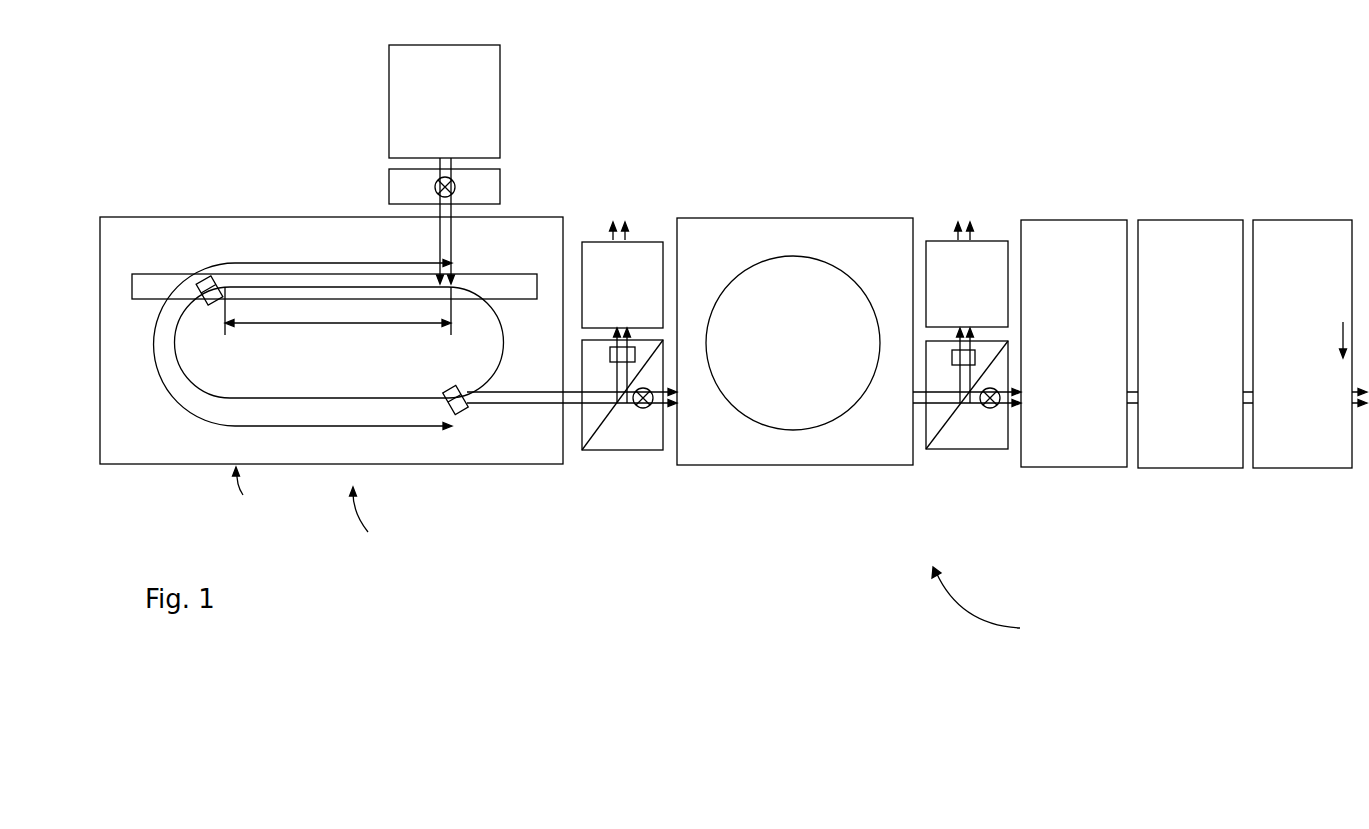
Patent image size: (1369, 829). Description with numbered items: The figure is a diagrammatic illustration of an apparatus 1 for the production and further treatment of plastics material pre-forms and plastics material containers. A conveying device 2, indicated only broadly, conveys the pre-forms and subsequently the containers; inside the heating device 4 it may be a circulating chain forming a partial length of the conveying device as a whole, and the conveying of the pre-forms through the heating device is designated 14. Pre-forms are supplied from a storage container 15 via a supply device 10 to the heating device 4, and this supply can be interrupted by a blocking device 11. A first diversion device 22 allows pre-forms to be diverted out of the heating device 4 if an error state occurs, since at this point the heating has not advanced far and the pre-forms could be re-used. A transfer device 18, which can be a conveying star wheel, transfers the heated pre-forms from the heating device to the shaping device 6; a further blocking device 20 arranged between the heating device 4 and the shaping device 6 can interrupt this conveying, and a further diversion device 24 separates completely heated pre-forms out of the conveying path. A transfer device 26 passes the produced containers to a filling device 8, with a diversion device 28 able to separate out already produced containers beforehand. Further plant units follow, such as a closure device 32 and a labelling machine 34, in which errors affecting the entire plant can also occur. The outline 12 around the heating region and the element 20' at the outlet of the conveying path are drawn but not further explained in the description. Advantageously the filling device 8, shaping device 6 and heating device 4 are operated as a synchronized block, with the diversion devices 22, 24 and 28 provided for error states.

The apparatus 1 is at (990, 605).
The conveying device 2 is at (367, 522).
The heating device 4 is at (244, 496).
The shaping device 6 is at (728, 218).
The filling device 8 is at (1050, 220).
The supply device 10 is at (389, 188).
The blocking device 11 is at (455, 187).
The sensor housing 12 is at (170, 217).
The conveying of the plastics material pre-forms 14 is at (255, 400).
The storage container 15 is at (389, 88).
The transfer device 18 is at (605, 452).
The further blocking device 20 is at (814, 417).
The sensor 20' is at (467, 414).
The first diversion device 22 is at (160, 274).
The further diversion device 24 is at (620, 350).
The transfer device 26 is at (943, 451).
The diversion device 28 is at (955, 352).
The closure device 32 is at (1163, 220).
The labelling machine 34 is at (1273, 220).